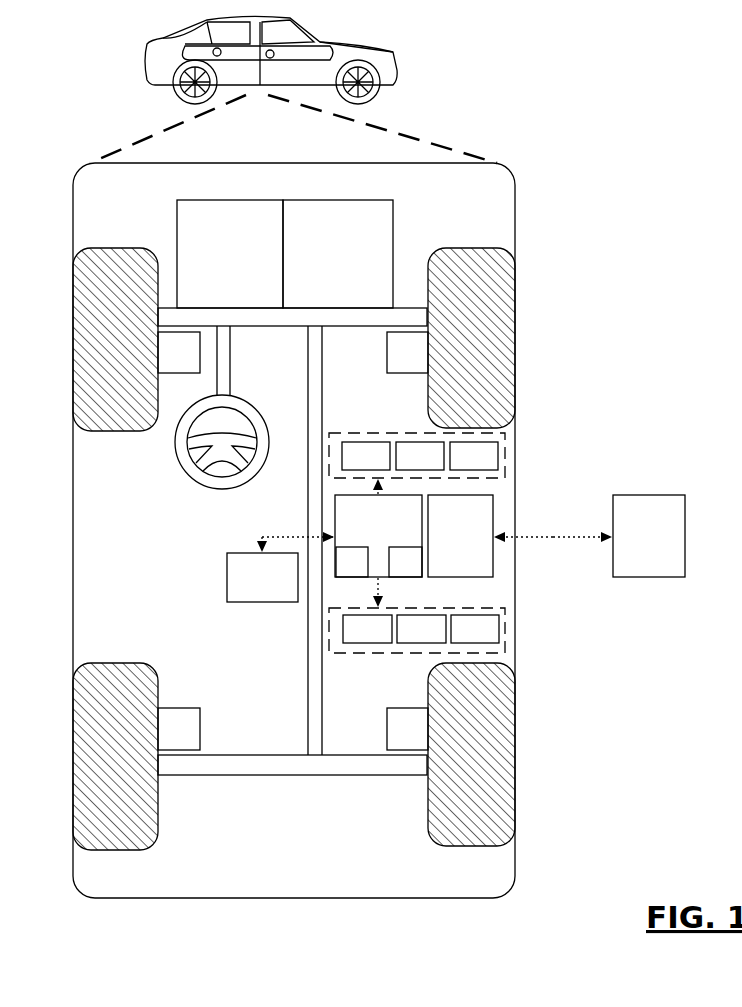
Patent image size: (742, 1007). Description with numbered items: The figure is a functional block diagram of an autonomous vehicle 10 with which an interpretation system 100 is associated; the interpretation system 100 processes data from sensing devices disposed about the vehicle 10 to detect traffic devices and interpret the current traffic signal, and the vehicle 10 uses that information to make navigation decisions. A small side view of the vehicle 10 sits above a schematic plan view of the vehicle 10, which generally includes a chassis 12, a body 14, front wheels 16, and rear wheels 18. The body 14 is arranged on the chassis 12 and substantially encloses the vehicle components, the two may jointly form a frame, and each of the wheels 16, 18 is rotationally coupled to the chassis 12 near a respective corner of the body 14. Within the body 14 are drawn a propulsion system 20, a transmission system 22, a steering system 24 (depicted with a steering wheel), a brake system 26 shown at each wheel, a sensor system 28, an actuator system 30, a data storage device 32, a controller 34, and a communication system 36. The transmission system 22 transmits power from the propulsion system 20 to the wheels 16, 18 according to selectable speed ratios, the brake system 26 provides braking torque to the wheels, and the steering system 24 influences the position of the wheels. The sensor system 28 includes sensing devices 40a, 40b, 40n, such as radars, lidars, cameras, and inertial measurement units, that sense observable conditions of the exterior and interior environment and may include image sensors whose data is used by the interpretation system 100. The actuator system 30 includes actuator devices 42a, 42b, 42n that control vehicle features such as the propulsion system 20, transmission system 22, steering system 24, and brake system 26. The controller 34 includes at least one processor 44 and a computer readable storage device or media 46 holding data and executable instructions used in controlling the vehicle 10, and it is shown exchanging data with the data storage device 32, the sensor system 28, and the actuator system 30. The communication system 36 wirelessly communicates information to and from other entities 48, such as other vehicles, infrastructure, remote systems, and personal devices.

The vehicle 10 is at (153, 70).
The interpretation system 100 is at (536, 176).
The chassis 12 is at (308, 692).
The body 14 is at (73, 522).
The front wheels 16 is at (110, 248).
The rear wheels 18 is at (132, 851).
The propulsion system 20 is at (230, 254).
The transmission system 22 is at (338, 254).
The steering system 24 is at (251, 347).
The brake system 26 is at (293, 541).
The sensor system 28 is at (356, 433).
The actuator system 30 is at (372, 650).
The data storage device 32 is at (262, 577).
The controller 34 is at (378, 536).
The communication system 36 is at (460, 536).
The sensing device 40a is at (366, 456).
The sensing device 40b is at (420, 456).
The sensing device 40n is at (474, 456).
The actuator device 42a is at (367, 629).
The actuator device 42b is at (421, 629).
The actuator device 42n is at (475, 629).
The processor 44 is at (352, 562).
The computer readable storage device or media 46 is at (405, 562).
The other entities 48 is at (649, 536).